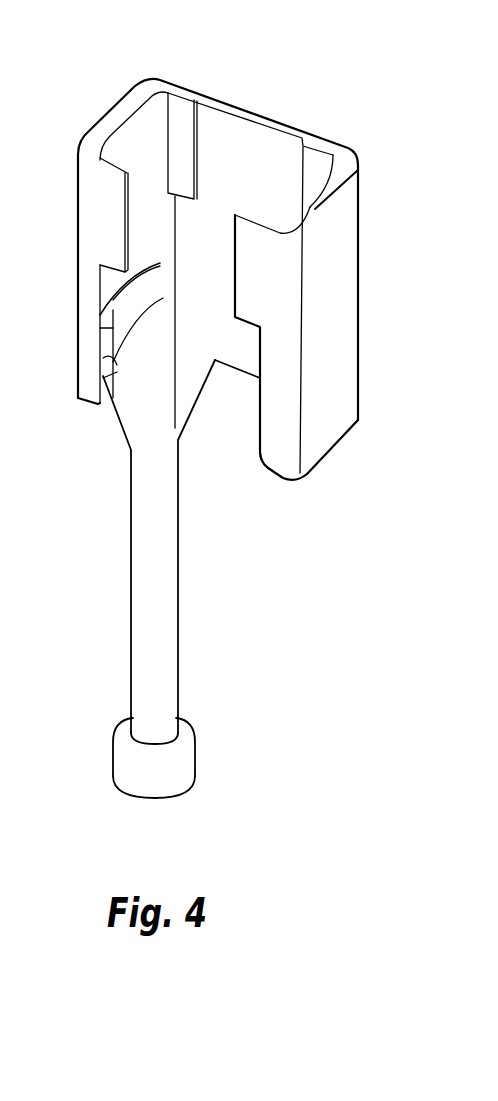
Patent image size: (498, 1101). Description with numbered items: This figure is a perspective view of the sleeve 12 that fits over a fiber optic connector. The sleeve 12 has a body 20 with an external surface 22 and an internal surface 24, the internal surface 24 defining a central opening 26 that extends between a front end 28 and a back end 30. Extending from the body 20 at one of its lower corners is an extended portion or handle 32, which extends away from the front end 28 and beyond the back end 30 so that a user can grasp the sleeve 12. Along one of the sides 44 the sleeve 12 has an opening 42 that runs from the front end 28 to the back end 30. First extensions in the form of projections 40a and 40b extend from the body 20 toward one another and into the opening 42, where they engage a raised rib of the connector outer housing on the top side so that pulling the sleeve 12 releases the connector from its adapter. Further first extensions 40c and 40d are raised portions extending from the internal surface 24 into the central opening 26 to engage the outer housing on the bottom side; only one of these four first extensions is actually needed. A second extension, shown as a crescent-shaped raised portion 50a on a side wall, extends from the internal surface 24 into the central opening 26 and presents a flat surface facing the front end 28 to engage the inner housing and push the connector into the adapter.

The sleeve 12 is at (351, 55).
The body 20 is at (392, 322).
The external surface 22 is at (352, 242).
The internal surface 24 is at (262, 142).
The central opening 26 is at (140, 143).
The front end 28 is at (241, 103).
The back end 30 is at (330, 457).
The handle 32 is at (180, 652).
The projection 40a is at (110, 233).
The projection 40b is at (243, 303).
The extension 40c is at (180, 110).
The extension 40d is at (320, 150).
The opening 42 is at (206, 237).
The side 44 is at (100, 206).
The raised portion 50a is at (113, 374).